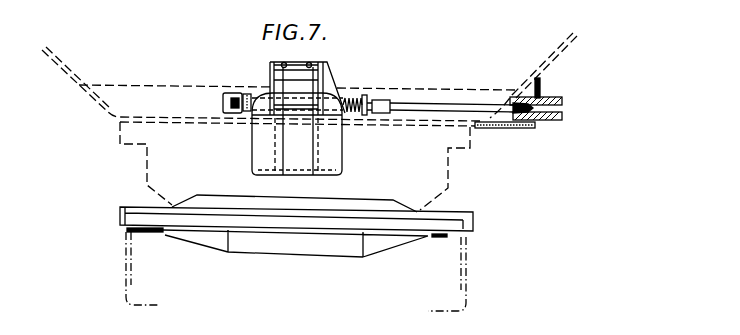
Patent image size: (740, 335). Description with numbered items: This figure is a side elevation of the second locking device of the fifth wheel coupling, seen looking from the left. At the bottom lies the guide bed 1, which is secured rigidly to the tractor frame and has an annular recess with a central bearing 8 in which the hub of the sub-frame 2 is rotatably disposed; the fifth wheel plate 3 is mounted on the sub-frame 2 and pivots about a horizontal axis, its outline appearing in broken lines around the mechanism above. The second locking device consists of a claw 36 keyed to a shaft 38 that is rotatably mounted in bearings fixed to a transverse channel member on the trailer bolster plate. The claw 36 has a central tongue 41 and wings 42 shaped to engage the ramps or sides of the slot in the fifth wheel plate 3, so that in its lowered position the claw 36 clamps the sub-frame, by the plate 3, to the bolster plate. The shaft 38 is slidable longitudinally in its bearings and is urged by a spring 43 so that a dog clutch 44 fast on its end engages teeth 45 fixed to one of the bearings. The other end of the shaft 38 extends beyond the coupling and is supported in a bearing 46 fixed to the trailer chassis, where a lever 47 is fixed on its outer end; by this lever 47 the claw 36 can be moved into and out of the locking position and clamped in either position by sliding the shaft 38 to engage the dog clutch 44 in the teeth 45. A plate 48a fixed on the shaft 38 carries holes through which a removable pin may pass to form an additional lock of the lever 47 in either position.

The guide bed 1 is at (166, 222).
The sub-frame 2 is at (134, 207).
The fifth wheel plate 3 is at (78, 87).
The central bearing 8 is at (327, 238).
The claw 36 is at (284, 129).
The shaft 38 is at (421, 112).
The central tongue 41 is at (250, 157).
The wings 42 is at (331, 145).
The spring 43 is at (347, 99).
The dog clutch 44 is at (243, 86).
The teeth 45 is at (236, 109).
The bearing 46 is at (523, 128).
The lever 47 is at (550, 122).
The plate 48a is at (549, 97).